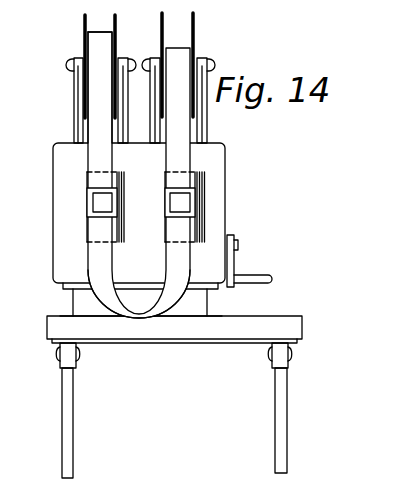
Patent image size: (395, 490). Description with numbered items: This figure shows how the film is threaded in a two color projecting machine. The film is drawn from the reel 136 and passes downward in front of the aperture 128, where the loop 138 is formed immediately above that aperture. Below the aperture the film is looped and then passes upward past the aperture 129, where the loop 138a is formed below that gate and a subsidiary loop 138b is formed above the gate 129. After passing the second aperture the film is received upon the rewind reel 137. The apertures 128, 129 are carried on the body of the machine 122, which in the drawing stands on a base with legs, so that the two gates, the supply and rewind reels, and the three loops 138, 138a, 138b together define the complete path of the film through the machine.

The housing 122 is at (222, 231).
The aperture 128 is at (187, 199).
The aperture 129 is at (95, 206).
The reel 136 is at (192, 62).
The rewind reel 137 is at (82, 28).
The loop 138 is at (176, 132).
The loop 138a is at (153, 320).
The subsidiary loop 138b is at (93, 133).